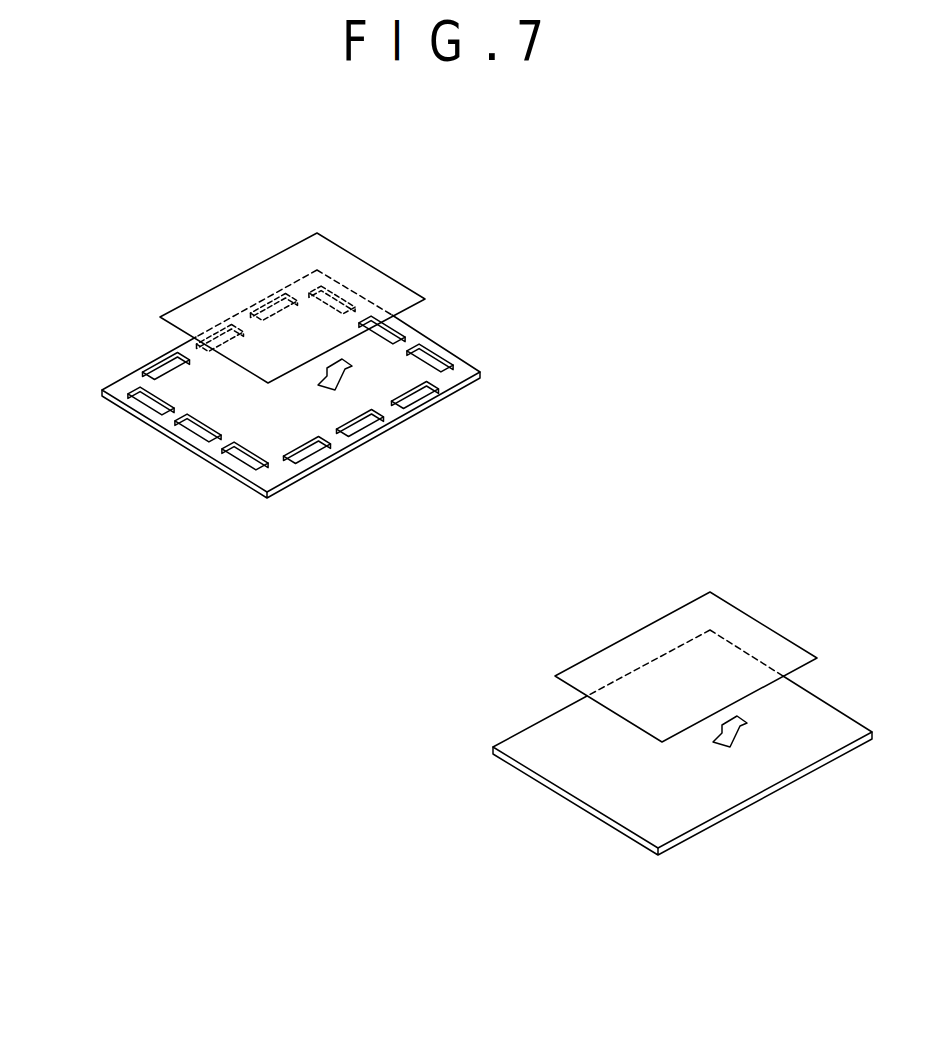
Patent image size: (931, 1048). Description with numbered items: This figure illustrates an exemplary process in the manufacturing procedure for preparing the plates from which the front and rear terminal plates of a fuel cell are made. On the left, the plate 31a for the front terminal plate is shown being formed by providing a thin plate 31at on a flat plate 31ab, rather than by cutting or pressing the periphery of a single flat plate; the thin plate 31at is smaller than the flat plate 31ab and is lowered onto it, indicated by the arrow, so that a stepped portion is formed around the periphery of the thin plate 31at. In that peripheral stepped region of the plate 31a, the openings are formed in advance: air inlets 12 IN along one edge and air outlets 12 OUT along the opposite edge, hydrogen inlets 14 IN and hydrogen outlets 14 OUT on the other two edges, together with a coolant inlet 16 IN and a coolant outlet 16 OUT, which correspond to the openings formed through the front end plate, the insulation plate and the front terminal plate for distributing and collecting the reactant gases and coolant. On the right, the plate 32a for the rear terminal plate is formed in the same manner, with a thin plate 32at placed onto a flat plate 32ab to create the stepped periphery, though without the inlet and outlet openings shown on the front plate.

The plate 31a is at (253, 248).
The thin plate 31at is at (320, 242).
The flat plate 31ab is at (285, 476).
The air inlets 12 IN is at (258, 308).
The air outlets 12 OUT is at (417, 387).
The hydrogen inlets 14 IN is at (147, 408).
The hydrogen outlets 14 OUT is at (355, 300).
The coolant inlet 16 IN is at (413, 330).
The coolant outlet 16 OUT is at (187, 435).
The plate 32a is at (645, 605).
The thin plate 32at is at (713, 603).
The flat plate 32ab is at (672, 833).